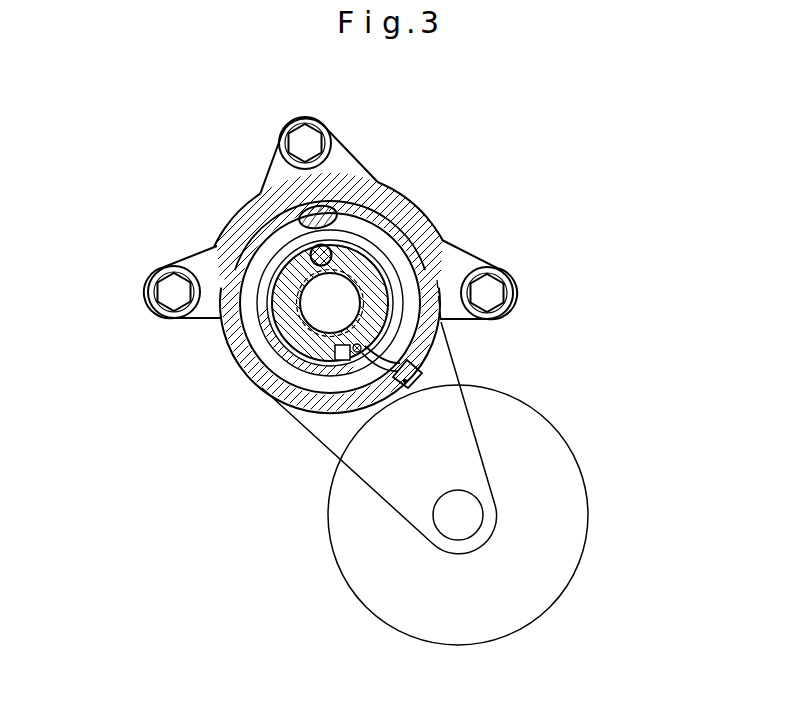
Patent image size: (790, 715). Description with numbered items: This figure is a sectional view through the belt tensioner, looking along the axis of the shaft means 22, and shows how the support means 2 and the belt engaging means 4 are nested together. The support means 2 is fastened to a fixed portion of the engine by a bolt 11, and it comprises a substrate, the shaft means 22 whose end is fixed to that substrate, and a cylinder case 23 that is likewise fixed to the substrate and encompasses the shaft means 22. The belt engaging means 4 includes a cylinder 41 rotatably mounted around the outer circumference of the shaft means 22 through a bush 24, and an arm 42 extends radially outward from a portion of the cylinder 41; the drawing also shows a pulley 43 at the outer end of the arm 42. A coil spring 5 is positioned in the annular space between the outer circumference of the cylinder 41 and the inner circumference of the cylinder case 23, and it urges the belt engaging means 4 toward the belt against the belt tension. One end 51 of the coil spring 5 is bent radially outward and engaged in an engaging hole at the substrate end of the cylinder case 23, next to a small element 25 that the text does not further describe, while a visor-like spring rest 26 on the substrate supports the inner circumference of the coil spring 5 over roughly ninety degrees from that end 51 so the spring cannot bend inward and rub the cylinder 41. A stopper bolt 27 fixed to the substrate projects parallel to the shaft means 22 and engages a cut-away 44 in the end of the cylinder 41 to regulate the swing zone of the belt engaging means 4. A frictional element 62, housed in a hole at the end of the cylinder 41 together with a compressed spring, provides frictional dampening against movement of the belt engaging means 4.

The support means 2 is at (235, 213).
The belt engaging means 4 is at (455, 331).
The coil spring 5 is at (252, 347).
The bolt 11 is at (308, 140).
The shaft means 22 is at (340, 290).
The cylinder case 23 is at (296, 372).
The bush 24 is at (357, 293).
The spring end 25 is at (403, 388).
The spring rest 26 is at (300, 385).
The stopper bolt 27 is at (365, 350).
The cylinder 41 is at (280, 357).
The arm 42 is at (423, 533).
The pulley 43 is at (584, 558).
The cut-away 44 is at (340, 380).
The end of the coil spring 51 is at (415, 374).
The frictional element 62 is at (328, 240).